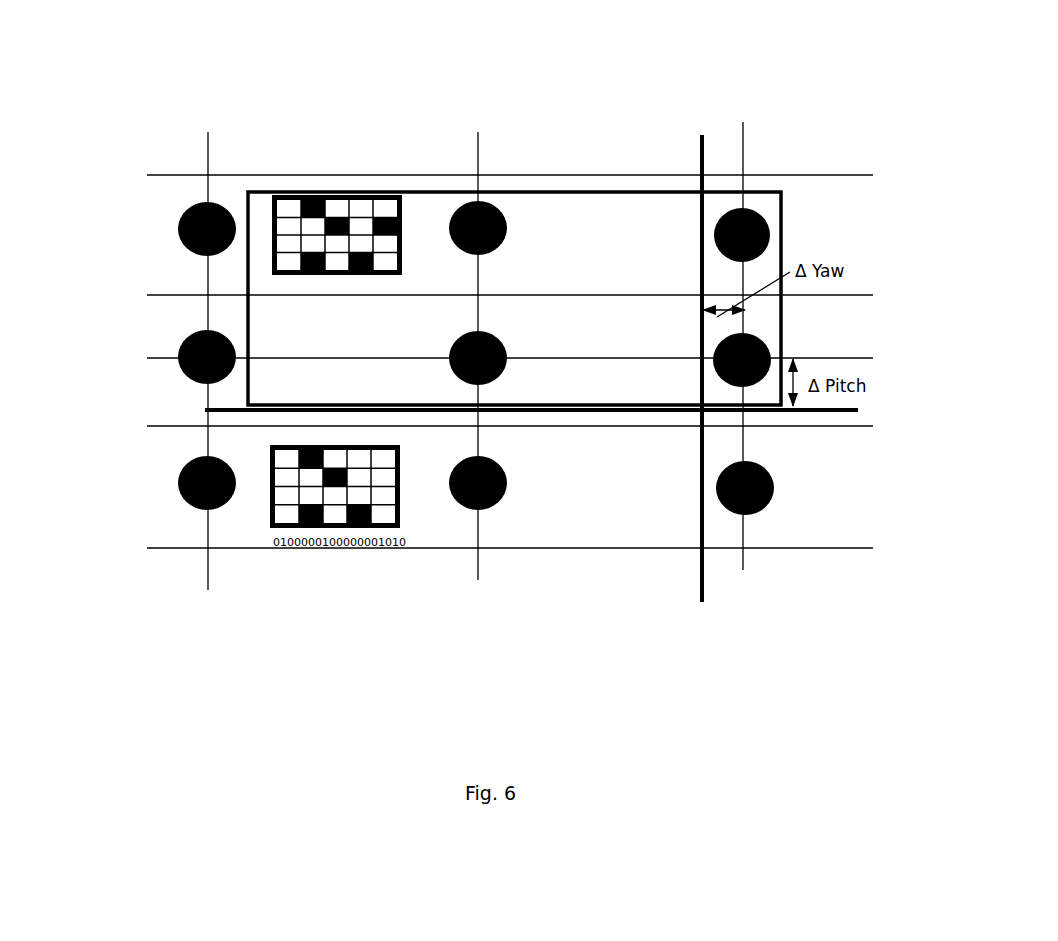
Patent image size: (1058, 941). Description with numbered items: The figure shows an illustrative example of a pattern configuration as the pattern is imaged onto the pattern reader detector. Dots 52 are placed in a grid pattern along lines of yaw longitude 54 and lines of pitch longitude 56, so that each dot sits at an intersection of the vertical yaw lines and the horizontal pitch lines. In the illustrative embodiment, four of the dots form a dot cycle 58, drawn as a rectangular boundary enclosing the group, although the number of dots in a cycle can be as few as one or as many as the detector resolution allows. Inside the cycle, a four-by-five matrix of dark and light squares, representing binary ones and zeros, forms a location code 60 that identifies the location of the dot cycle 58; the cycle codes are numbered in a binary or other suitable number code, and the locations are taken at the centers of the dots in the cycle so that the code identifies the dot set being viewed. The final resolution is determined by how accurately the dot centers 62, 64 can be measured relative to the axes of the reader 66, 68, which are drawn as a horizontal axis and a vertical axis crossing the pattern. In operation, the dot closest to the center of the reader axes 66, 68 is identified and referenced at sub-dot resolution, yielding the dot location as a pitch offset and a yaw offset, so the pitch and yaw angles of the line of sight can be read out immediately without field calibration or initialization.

The dots 52 is at (225, 512).
The lines of yaw longitude 54 is at (218, 118).
The lines of pitch longitude 56 is at (142, 421).
The dot cycle 58 is at (615, 189).
The location code 60 is at (318, 193).
The dot center 62 is at (877, 360).
The dot center 64 is at (746, 574).
The reader axis 66 is at (862, 415).
The reader axis 68 is at (704, 606).